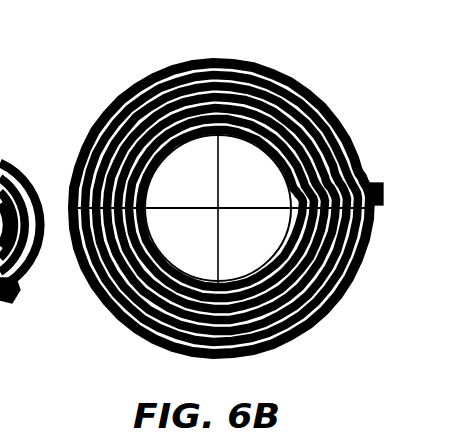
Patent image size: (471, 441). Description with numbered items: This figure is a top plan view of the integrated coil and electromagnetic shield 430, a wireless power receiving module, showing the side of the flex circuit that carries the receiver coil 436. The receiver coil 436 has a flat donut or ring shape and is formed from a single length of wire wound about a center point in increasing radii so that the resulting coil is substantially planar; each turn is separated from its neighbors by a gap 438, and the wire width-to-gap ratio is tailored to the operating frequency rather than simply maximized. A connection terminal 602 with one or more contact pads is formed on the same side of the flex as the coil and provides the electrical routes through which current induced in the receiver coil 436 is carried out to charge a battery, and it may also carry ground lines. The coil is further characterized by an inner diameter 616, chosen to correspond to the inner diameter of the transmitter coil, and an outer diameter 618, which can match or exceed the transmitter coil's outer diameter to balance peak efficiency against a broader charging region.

The integrated coil and electromagnetic shield 430 is at (78, 99).
The receiver coil 436 is at (311, 93).
The gap 438 is at (346, 278).
The connection terminal 602 is at (385, 185).
The inner diameter 616 is at (220, 168).
The outer diameter 618 is at (158, 208).